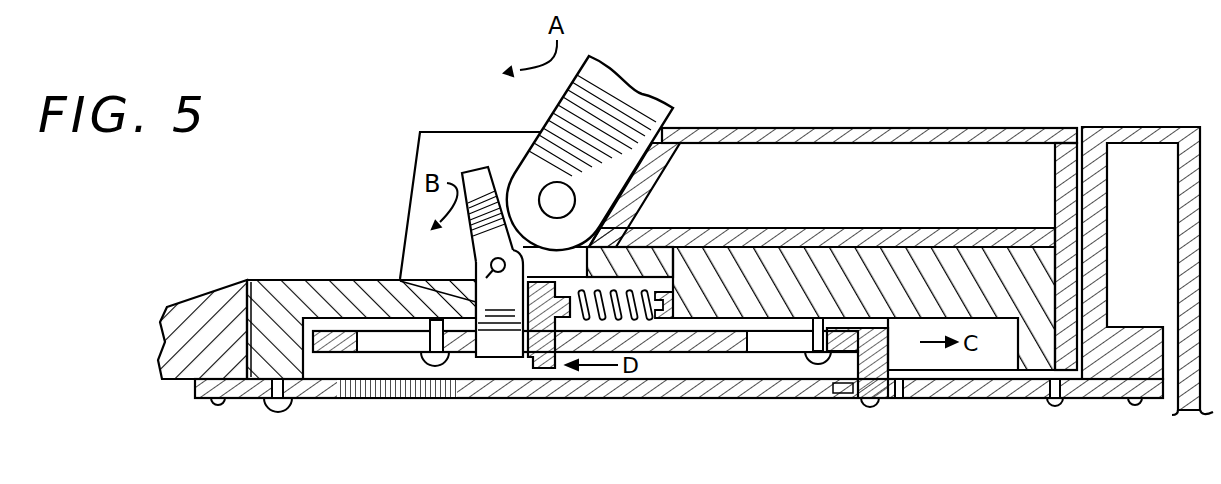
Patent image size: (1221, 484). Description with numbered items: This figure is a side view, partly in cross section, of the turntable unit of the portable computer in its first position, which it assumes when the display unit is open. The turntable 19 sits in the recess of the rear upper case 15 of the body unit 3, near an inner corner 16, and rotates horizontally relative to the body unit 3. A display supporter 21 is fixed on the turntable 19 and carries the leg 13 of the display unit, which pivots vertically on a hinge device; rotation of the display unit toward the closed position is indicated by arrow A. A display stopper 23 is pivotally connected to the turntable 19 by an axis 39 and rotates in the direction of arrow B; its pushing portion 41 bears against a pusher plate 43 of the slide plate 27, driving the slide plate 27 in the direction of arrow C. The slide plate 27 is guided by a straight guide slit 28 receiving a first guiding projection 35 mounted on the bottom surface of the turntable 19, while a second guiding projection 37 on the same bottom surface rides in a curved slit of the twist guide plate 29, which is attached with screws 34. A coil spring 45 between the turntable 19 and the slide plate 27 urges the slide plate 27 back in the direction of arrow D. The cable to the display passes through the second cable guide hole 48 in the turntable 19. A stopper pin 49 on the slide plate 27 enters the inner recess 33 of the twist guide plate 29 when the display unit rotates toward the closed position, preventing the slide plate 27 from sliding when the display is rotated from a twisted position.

The body unit 3 is at (168, 307).
The leg 13 is at (643, 98).
The rear upper case 15 is at (1162, 126).
The inner corner 16 is at (410, 156).
The turntable 19 is at (308, 280).
The display supporter 21 is at (890, 128).
The display stopper 23 is at (468, 228).
The slide plate 27 is at (693, 353).
The straight guide slit 28 is at (373, 345).
The twist guide plate 29 is at (980, 400).
The inner recess 33 is at (898, 400).
The screw 34 is at (225, 412).
The first guiding projection 35 is at (433, 367).
The second guiding projection 37 is at (283, 417).
The axis 39 is at (496, 283).
The pushing portion 41 is at (492, 347).
The pusher plate 43 is at (542, 368).
The coil spring 45 is at (700, 232).
The second cable guide hole 48 is at (580, 267).
The stopper pin 49 is at (868, 407).